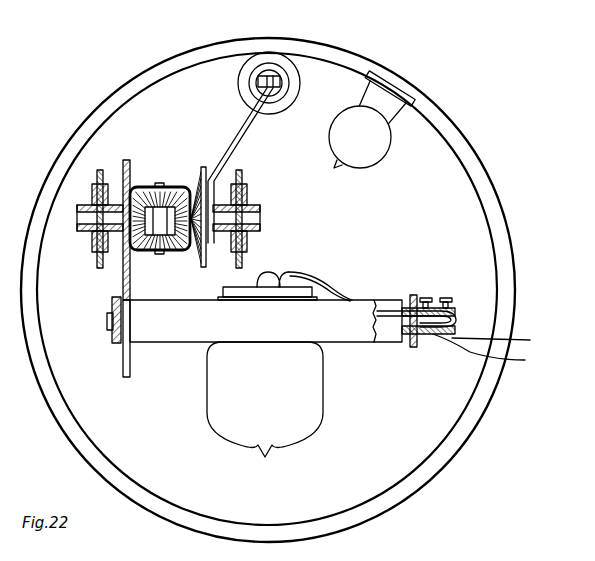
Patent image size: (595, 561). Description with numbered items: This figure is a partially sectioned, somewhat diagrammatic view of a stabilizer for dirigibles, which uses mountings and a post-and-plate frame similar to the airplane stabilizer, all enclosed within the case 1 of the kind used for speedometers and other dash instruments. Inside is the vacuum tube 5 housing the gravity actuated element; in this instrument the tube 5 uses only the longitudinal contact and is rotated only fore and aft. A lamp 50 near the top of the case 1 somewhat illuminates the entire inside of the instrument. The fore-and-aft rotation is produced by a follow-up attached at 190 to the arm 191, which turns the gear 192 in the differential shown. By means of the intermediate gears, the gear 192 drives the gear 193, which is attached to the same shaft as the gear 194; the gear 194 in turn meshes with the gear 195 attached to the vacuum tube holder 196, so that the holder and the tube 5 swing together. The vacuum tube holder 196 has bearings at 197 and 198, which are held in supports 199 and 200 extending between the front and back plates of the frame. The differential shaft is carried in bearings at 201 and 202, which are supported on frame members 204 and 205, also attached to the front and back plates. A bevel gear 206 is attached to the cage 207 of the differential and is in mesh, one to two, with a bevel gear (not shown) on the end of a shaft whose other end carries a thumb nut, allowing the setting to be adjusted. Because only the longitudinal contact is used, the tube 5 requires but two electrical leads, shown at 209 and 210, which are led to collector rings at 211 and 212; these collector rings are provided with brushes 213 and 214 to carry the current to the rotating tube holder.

The case 1 is at (433, 98).
The vacuum tube 5 is at (265, 399).
The lamp 50 is at (372, 119).
The follow-up attachment point 190 is at (294, 98).
The arm 191 is at (246, 138).
The gear 192 is at (174, 237).
The gear 193 is at (137, 244).
The gear 194 is at (131, 160).
The gear 195 is at (127, 378).
The vacuum tube holder 196 is at (266, 321).
The bearing 197 is at (107, 324).
The bearing 198 is at (419, 336).
The support 199 is at (115, 346).
The support 200 is at (412, 348).
The bearing 201 is at (82, 232).
The bearing 202 is at (261, 231).
The frame member 204 is at (98, 266).
The frame member 205 is at (242, 263).
The bevel gear 206 is at (202, 168).
The cage 207 is at (175, 186).
The electrical lead 209 is at (318, 274).
The electrical lead 210 is at (335, 287).
The collector ring 211 is at (498, 353).
The collector ring 212 is at (510, 342).
The brush 213 is at (425, 298).
The brush 214 is at (448, 298).